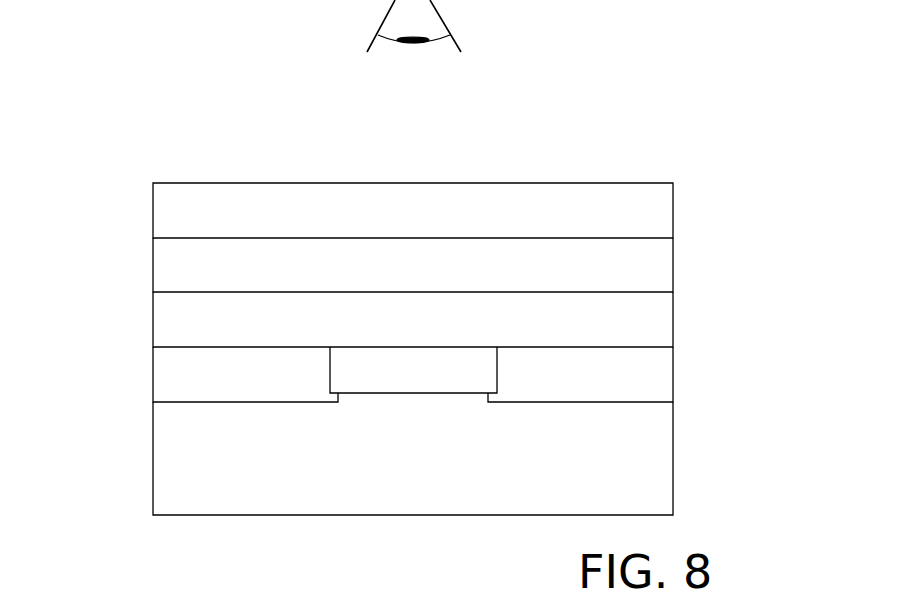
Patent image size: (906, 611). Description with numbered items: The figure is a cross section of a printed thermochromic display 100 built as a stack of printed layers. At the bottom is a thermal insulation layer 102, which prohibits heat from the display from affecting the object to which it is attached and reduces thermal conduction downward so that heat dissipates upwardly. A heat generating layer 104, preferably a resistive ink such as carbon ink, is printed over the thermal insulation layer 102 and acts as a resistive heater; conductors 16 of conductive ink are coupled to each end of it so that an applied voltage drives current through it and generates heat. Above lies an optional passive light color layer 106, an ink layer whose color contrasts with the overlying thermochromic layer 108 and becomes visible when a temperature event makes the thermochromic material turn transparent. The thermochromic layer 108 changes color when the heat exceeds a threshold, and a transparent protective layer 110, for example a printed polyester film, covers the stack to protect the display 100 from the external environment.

The printed thermochromic display 100 is at (133, 134).
The thermal insulation layer 102 is at (653, 478).
The heat generating layer 104 is at (357, 380).
The passive light color layer 106 is at (660, 322).
The thermochromic layer 108 is at (650, 270).
The transparent protective layer 110 is at (650, 204).
The conductors 16 is at (165, 382).